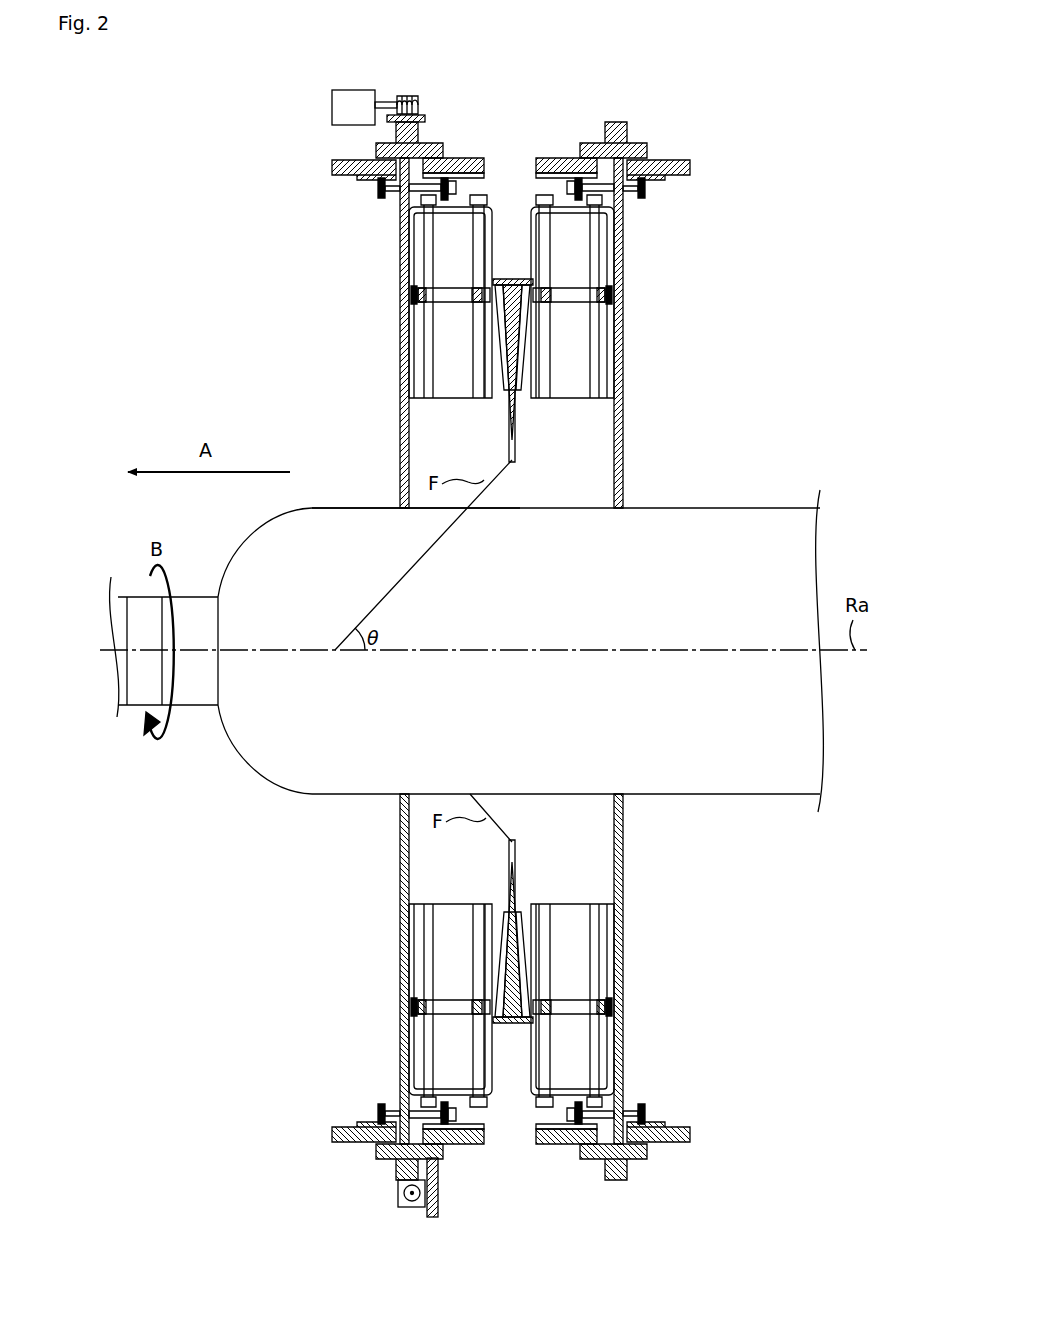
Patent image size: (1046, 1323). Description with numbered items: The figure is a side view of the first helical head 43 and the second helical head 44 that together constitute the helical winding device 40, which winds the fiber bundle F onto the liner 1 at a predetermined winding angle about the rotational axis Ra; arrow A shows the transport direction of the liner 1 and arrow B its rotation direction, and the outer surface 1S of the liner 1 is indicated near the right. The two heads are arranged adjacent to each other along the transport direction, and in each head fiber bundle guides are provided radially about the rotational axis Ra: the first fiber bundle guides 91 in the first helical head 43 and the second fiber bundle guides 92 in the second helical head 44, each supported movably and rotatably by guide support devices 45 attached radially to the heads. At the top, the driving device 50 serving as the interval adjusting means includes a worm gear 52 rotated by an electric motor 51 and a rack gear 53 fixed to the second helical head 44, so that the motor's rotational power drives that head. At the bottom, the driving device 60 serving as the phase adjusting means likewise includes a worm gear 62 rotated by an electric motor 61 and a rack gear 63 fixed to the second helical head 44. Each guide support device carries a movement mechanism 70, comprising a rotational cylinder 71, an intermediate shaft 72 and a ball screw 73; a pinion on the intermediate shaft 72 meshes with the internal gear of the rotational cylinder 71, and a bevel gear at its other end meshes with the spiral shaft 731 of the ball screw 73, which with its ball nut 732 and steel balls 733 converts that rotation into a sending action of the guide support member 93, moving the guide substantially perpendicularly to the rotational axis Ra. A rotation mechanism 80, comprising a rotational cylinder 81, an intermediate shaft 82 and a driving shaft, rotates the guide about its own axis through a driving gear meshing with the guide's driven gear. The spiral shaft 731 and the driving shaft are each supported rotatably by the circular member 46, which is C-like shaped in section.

The liner 1 is at (686, 488).
The outer surface of container 1S is at (760, 508).
The helical winding device 40 is at (106, 100).
The first helical head 43 is at (796, 220).
The second helical head 44 is at (236, 220).
The guide support device 45 is at (378, 292).
The circular member 46 is at (412, 352).
The driving device 50 is at (352, 97).
The electric motor 51 is at (332, 108).
The worm gear 52 is at (405, 95).
The rack gear 53 is at (420, 118).
The driving device 60 is at (360, 1199).
The electric motor 61 is at (398, 1193).
The worm gear 62 is at (410, 1202).
The rack gear 63 is at (398, 1180).
The movement mechanism 70 is at (332, 150).
The rotational cylinder 71 is at (332, 168).
The intermediate shaft 72 is at (386, 198).
The ball screw 73 is at (511, 651).
The spiral shaft 731 is at (444, 212).
The ball nut 732 is at (442, 284).
The steel balls 733 is at (444, 303).
The rotation mechanism 80 is at (511, 652).
The rotational cylinder 81 is at (542, 160).
The intermediate shaft 82 is at (562, 188).
The first fiber bundle guide 91 is at (518, 448).
The second fiber bundle guide 92 is at (507, 448).
The guide support member 93 is at (497, 400).